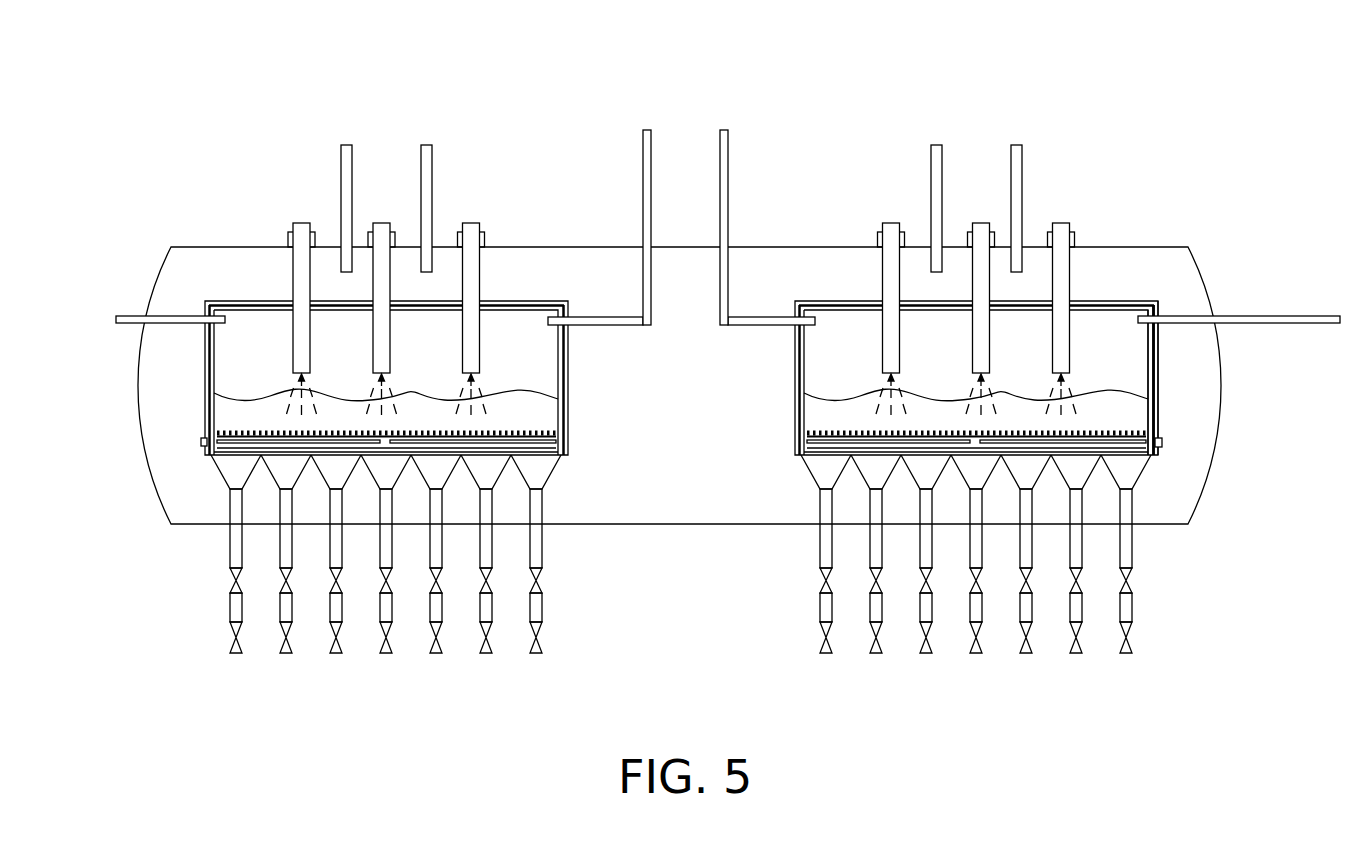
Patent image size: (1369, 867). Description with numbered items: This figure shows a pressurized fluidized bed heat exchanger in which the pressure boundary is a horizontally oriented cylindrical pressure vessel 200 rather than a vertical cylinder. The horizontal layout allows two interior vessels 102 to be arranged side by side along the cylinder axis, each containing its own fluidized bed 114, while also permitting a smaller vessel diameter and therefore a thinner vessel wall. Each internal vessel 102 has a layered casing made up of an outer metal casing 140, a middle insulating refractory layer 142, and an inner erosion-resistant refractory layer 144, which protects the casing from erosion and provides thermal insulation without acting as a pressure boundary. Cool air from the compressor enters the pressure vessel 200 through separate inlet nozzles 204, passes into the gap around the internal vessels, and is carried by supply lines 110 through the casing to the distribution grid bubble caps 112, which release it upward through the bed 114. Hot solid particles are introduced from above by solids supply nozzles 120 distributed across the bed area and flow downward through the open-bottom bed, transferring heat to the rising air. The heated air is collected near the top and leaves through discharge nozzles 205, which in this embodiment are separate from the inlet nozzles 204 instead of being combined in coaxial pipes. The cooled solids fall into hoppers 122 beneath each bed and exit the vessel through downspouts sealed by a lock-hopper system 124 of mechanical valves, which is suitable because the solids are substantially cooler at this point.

The horizontally oriented cylindrical pressure vessel 200 is at (152, 287).
The internal vessel 102 is at (248, 296).
The supply lines 110 is at (190, 433).
The distribution grid bubble caps 112 is at (258, 422).
The fluidized bed 114 is at (445, 392).
The solids supply nozzles 120 is at (293, 262).
The hoppers 122 is at (200, 469).
The lock-hopper system 124 is at (217, 616).
The outer metal casing 140 is at (1168, 335).
The middle insulating refractory layer 142 is at (1162, 380).
The inner erosion-resistant refractory layer 144 is at (1162, 407).
The inlet nozzles 204 is at (340, 157).
The discharge nozzles 205 is at (171, 323).